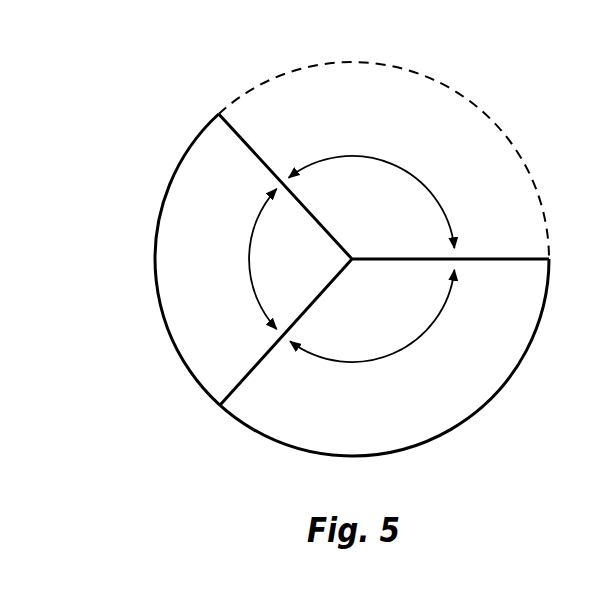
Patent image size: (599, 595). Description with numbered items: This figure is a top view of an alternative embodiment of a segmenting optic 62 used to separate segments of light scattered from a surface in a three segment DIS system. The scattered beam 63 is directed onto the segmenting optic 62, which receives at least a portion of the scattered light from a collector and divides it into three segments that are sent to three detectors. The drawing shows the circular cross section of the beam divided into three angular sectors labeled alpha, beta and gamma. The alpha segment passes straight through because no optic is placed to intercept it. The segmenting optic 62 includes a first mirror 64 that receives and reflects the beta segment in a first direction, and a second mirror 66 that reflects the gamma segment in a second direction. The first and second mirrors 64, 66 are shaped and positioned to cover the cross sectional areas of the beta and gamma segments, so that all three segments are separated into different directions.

The segmenting optic 62 is at (295, 236).
The scattered beam 63 is at (482, 97).
The first mirror 64 is at (466, 400).
The second mirror 66 is at (192, 345).